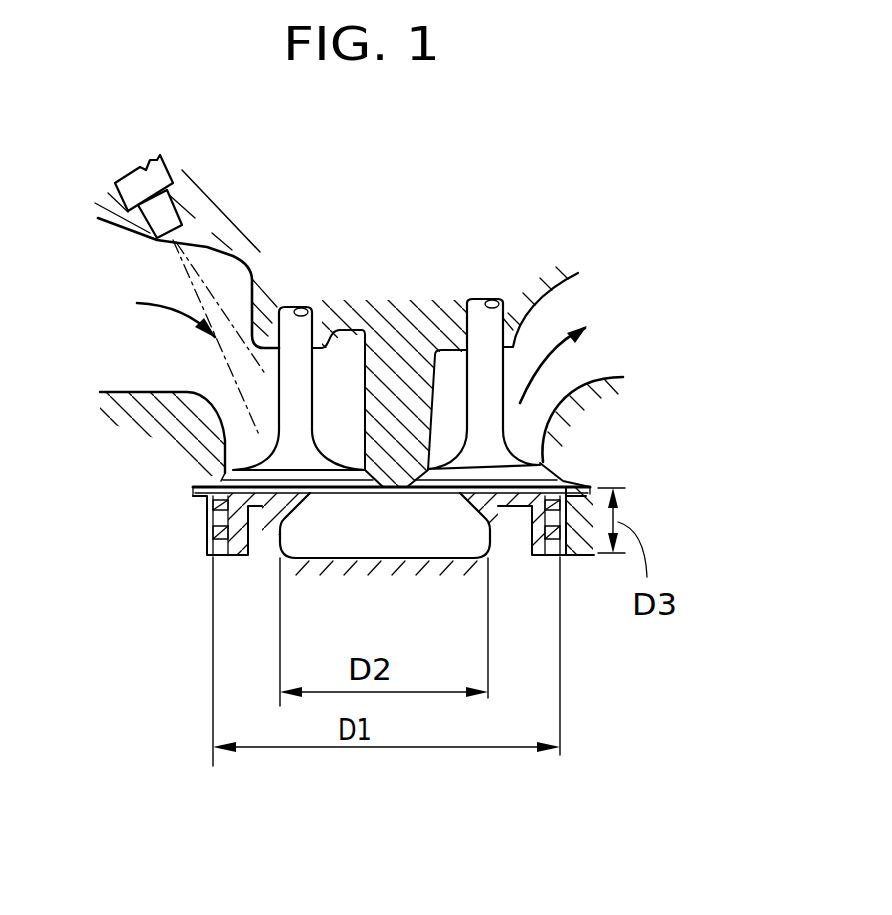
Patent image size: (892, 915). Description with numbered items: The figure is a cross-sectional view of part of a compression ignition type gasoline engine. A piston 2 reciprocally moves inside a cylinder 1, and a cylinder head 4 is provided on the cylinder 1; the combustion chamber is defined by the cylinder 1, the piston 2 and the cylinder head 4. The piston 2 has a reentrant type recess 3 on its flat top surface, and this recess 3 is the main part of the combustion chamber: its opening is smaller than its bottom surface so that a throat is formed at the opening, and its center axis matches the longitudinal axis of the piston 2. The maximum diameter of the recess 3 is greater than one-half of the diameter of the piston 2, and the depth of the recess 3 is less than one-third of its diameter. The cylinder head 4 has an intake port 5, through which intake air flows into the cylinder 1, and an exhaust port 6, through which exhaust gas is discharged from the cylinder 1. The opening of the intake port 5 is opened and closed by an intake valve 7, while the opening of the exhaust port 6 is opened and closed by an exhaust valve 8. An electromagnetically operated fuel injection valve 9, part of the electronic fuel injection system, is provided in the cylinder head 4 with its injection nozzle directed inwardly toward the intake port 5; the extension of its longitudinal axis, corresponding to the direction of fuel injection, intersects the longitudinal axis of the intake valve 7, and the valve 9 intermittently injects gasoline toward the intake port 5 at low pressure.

The cylinder 1 is at (207, 513).
The piston 2 is at (230, 540).
The reentrant type recess 3 is at (292, 522).
The cylinder head 4 is at (570, 468).
The intake port 5 is at (143, 385).
The exhaust port 6 is at (558, 363).
The intake valve 7 is at (293, 423).
The exhaust valve 8 is at (477, 410).
The fuel injection valve 9 is at (157, 170).